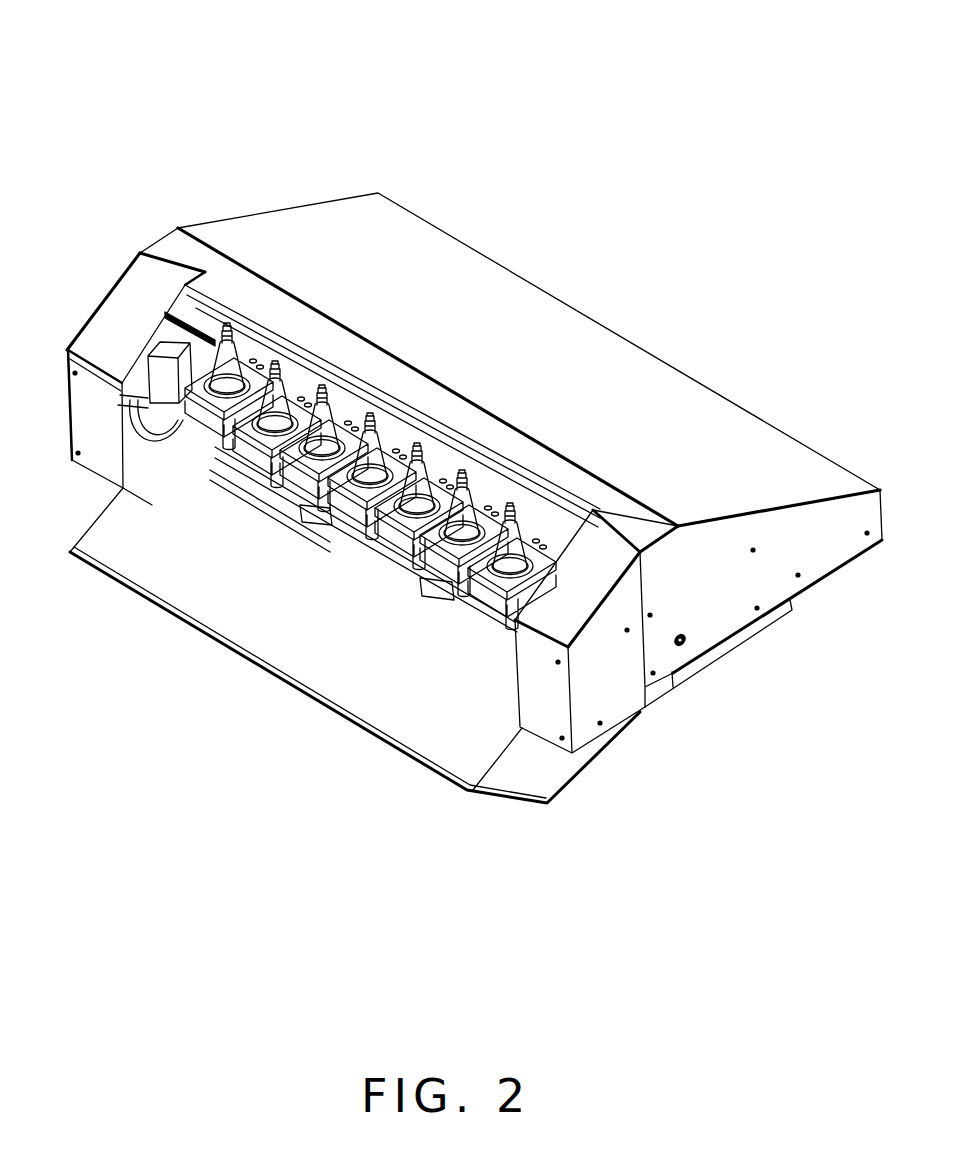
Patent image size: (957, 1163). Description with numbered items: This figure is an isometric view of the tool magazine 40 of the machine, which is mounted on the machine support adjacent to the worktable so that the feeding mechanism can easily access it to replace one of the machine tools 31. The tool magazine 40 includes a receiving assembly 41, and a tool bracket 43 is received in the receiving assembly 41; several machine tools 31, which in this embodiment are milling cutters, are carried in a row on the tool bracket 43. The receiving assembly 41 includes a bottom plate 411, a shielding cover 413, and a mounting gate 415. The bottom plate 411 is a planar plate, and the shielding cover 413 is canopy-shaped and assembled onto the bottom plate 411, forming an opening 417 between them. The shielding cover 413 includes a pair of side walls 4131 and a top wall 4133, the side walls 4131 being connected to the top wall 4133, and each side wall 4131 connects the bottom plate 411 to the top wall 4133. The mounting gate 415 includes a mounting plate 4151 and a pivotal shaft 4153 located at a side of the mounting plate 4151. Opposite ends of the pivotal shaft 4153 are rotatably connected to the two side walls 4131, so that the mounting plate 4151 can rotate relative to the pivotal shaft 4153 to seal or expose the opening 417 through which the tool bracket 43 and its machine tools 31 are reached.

The tool magazine 40 is at (520, 52).
The receiving assembly 41 is at (305, 193).
The bottom plate 411 is at (183, 303).
The shielding cover 413 is at (864, 368).
The side wall 4131 is at (770, 527).
The top wall 4133 is at (620, 407).
The mounting gate 415 is at (322, 784).
The mounting plate 4151 is at (313, 660).
The pivotal shaft 4153 is at (400, 550).
The opening 417 is at (550, 522).
The tool bracket 43 is at (248, 447).
The machine tool 31 is at (467, 560).